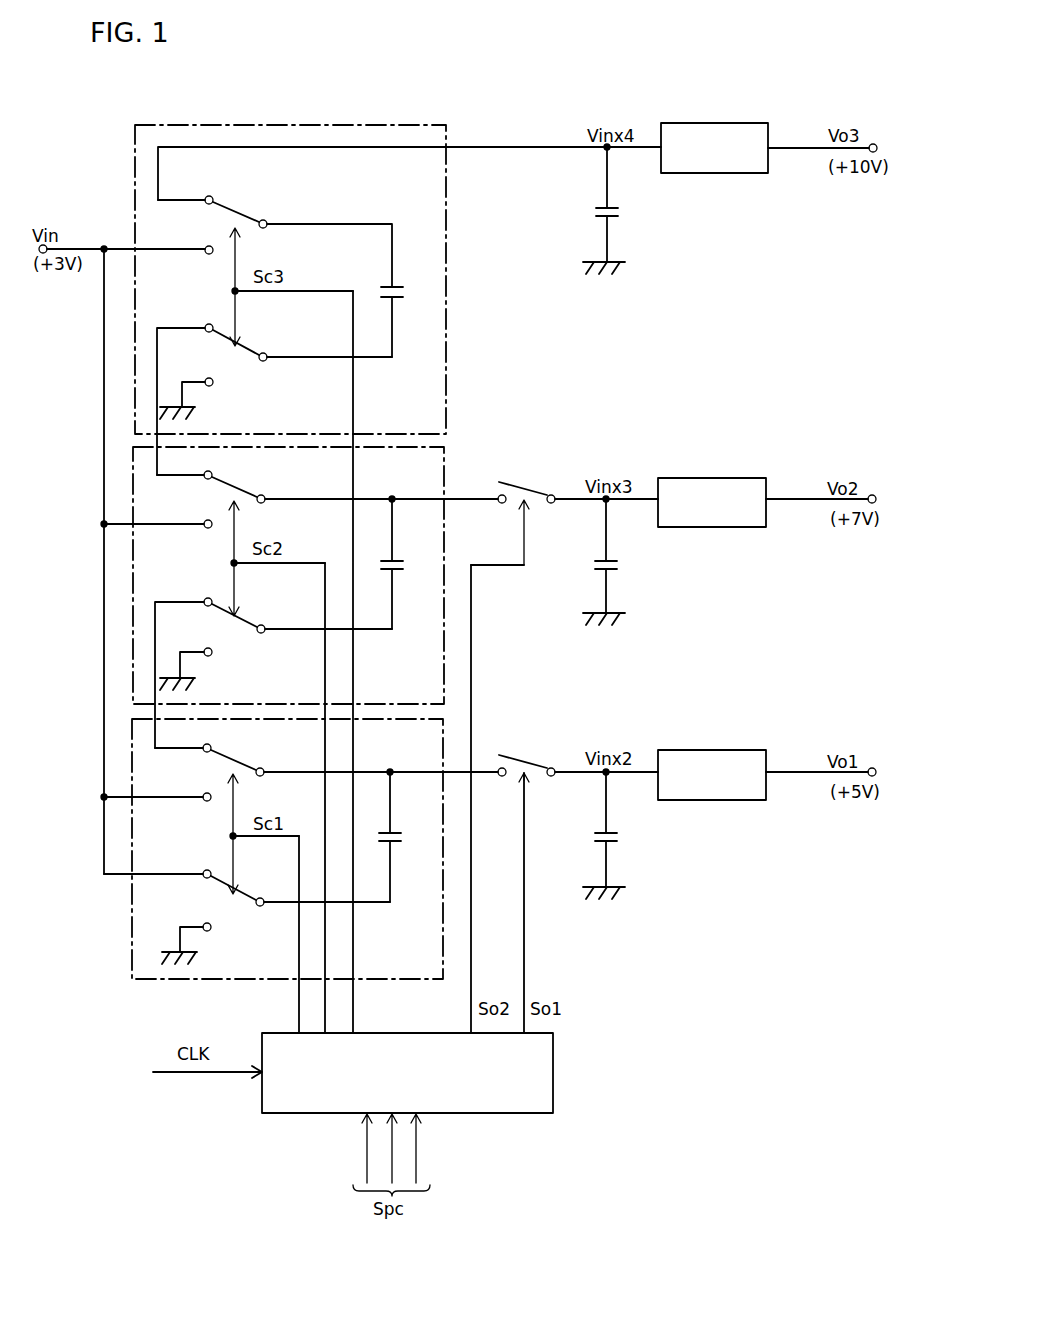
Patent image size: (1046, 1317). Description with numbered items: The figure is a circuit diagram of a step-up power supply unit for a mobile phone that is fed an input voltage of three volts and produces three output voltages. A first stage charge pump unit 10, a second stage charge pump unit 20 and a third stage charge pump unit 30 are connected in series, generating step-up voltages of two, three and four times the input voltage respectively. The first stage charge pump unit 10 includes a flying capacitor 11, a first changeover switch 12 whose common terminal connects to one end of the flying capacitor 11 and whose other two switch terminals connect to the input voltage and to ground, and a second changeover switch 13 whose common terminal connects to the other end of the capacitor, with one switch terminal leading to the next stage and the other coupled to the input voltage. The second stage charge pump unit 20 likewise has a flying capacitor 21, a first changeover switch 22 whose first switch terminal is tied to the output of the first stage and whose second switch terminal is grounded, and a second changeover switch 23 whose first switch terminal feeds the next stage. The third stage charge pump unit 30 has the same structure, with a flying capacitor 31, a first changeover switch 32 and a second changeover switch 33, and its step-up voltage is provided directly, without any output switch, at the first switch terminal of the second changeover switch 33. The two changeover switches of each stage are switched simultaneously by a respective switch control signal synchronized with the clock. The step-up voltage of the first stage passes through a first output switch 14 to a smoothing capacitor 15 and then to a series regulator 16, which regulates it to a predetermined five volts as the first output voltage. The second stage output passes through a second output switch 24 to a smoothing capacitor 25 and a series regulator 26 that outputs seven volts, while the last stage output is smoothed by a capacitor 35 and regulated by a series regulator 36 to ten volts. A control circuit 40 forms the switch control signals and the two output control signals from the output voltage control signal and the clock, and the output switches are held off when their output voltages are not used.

The first stage charge pump unit 10 is at (130, 945).
The flying capacitor 11 is at (397, 826).
The first changeover switch 12 is at (243, 890).
The second changeover switch 13 is at (223, 757).
The first output switch 14 is at (523, 757).
The smoothing capacitor 15 is at (621, 838).
The series regulator (LDO) 16 is at (722, 747).
The second stage charge pump unit 20 is at (447, 462).
The flying capacitor 21 is at (397, 553).
The first changeover switch 22 is at (243, 616).
The second changeover switch 23 is at (223, 484).
The second output switch 24 is at (523, 484).
The smoothing capacitor 25 is at (621, 564).
The series regulator 26 is at (722, 475).
The third stage charge pump unit 30 is at (450, 198).
The flying capacitor 31 is at (397, 278).
The first changeover switch 32 is at (244, 342).
The second changeover switch 33 is at (224, 210).
The smoothing capacitor 35 is at (621, 212).
The series regulator 36 is at (724, 123).
The control circuit 40 is at (556, 1079).